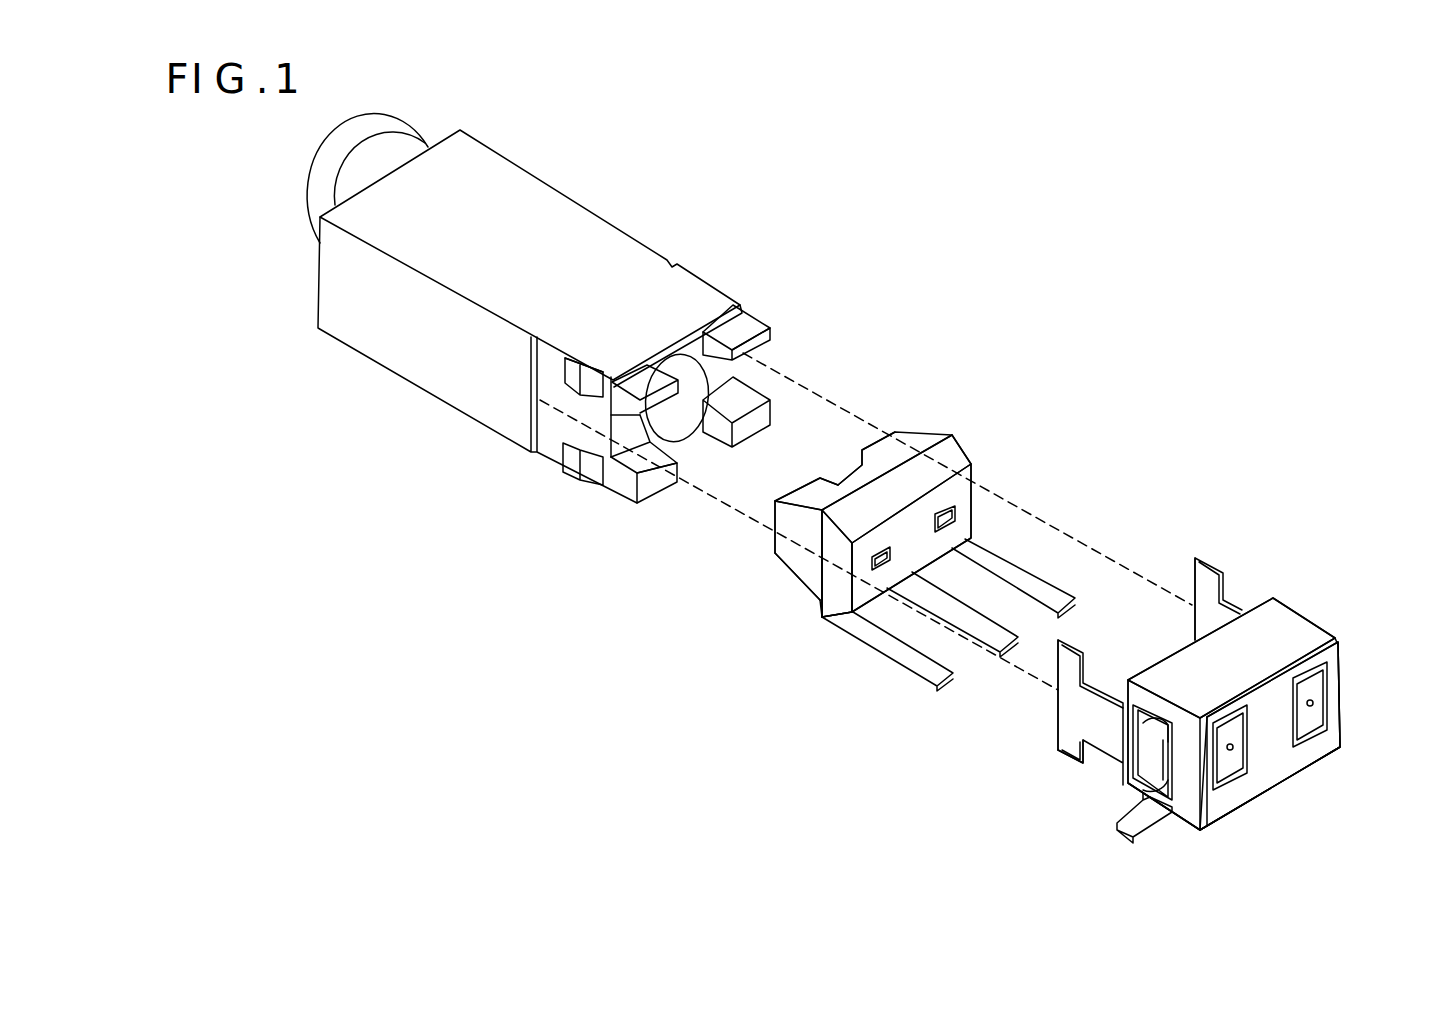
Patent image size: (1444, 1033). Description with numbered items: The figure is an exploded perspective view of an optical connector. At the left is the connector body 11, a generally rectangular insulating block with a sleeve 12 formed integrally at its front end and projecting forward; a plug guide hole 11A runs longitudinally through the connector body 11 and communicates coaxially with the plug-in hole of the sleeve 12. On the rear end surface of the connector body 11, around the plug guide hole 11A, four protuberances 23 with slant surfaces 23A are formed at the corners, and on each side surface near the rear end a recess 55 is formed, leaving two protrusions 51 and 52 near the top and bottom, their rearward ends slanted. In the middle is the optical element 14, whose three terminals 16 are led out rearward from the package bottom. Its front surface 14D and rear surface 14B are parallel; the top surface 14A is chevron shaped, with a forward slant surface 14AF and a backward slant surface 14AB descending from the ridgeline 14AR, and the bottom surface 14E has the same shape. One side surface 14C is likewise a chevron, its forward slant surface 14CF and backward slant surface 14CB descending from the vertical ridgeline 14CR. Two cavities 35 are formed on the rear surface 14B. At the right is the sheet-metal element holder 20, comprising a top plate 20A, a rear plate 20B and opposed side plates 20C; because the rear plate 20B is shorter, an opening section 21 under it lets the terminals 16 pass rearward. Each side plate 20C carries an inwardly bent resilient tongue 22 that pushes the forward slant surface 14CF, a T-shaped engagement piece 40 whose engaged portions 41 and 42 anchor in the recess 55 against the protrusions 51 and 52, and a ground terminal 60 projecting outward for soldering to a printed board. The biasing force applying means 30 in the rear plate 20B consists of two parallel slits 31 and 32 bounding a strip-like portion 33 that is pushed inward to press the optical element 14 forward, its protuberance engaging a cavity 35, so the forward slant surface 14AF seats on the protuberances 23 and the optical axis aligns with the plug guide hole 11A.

The connector body 11 is at (562, 216).
The plug guide hole 11A is at (683, 366).
The sleeve 12 is at (387, 130).
The optical element 14 is at (1001, 470).
The top surface 14A is at (906, 441).
The backward slant surface 14AB is at (962, 463).
The forward slant surface 14AF is at (803, 492).
The ridgeline 14AR is at (889, 462).
The rear surface 14B is at (1001, 470).
The side surface 14C is at (767, 530).
The backward slant surface 14CB is at (840, 590).
The forward slant surface 14CF is at (800, 580).
The ridgeline 14CR is at (810, 535).
The front surface 14D is at (782, 525).
The bottom surface 14E is at (805, 606).
The terminals 16 is at (1060, 594).
The element holder 20 is at (1285, 580).
The top plate 20A is at (1280, 632).
The rear plate 20B is at (1315, 658).
The side plates 20C is at (1128, 783).
The opening section 21 is at (1313, 743).
The resilient tongue 22 is at (1155, 770).
The protuberances 23 is at (745, 335).
The slant surfaces 23A is at (745, 390).
The biasing force applying means 30 is at (1370, 827).
The slit 31 is at (1327, 697).
The slit 32 is at (1317, 745).
The strip-like portion 33 is at (1318, 713).
The cavities 35 is at (955, 510).
The engagement piece 40 is at (1232, 612).
The engaged portion 41 is at (1205, 572).
The engaged portion 42 is at (1057, 745).
The protrusion 51 is at (573, 467).
The protrusion 52 is at (747, 323).
The recess 55 is at (671, 264).
The ground terminal 60 is at (1128, 822).